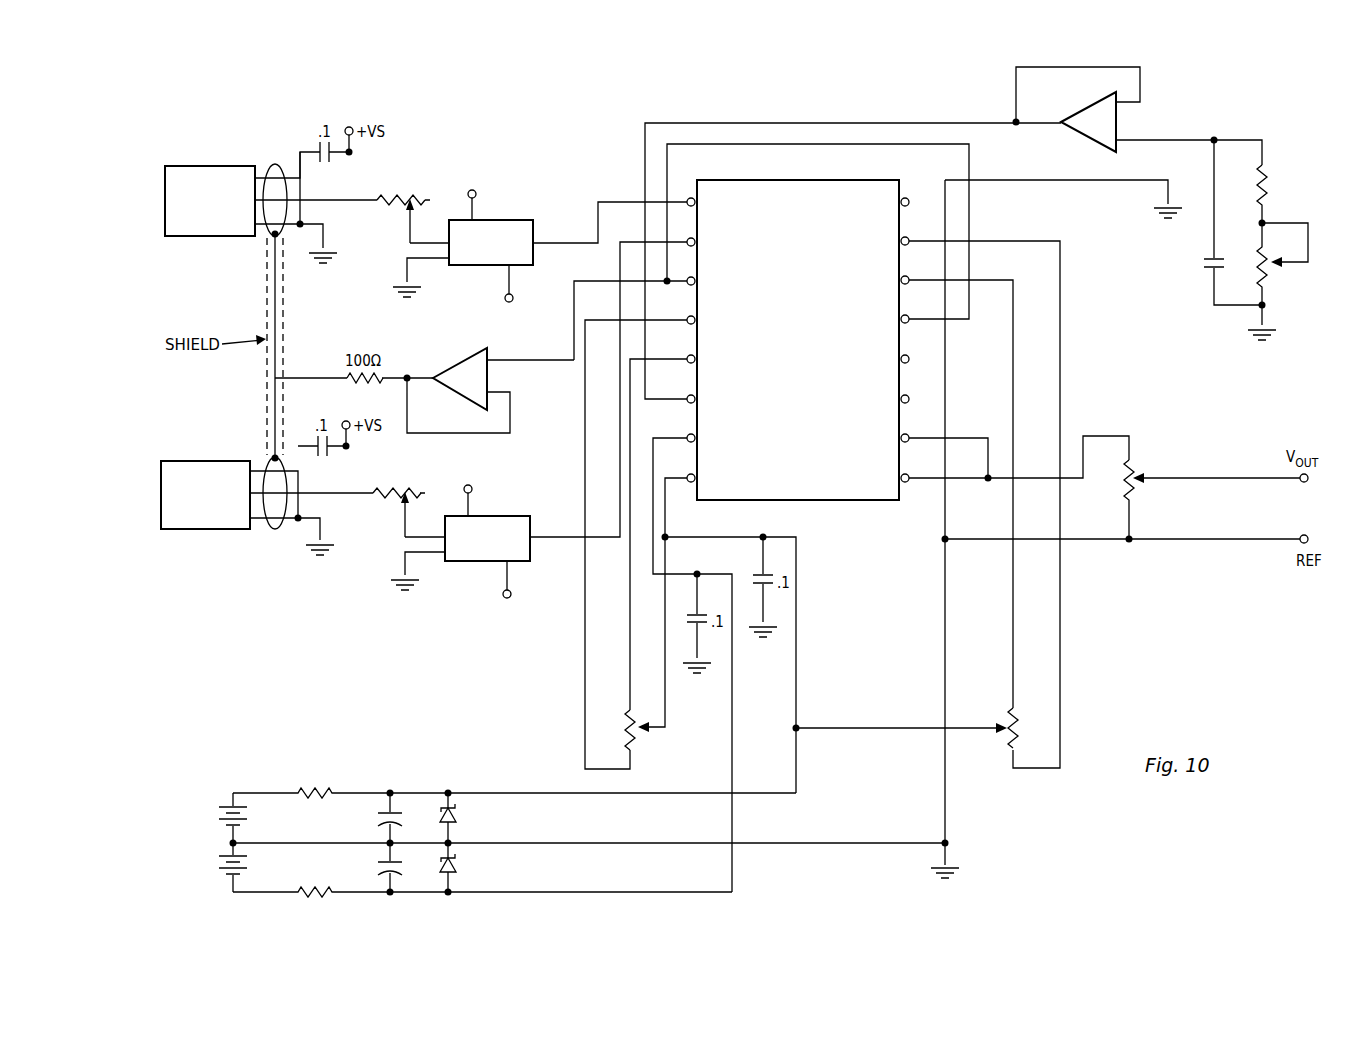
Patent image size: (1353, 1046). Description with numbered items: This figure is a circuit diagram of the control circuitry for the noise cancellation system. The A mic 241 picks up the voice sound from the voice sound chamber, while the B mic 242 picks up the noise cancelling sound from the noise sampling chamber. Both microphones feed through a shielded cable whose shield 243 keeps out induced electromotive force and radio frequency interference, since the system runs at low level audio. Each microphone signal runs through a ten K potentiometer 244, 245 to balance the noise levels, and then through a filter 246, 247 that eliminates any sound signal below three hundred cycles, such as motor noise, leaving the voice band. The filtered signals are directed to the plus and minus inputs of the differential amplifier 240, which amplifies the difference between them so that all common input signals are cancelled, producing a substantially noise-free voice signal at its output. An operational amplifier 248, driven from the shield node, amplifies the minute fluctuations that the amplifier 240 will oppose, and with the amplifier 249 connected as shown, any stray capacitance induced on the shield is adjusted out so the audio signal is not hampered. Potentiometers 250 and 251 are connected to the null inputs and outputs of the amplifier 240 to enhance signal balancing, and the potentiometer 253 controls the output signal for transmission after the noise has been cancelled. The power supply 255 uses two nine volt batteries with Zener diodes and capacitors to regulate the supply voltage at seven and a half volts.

The differential amplifier 240 is at (843, 503).
The A mic 241 is at (200, 529).
The B mic 242 is at (208, 166).
The shield 243 is at (274, 282).
The 10 K potentiometer 244 is at (437, 198).
The 10 K potentiometer 245 is at (428, 498).
The filter 246 is at (536, 224).
The filter 247 is at (463, 562).
The operational amplifier 248 is at (458, 360).
The amplifier 249 is at (1126, 122).
The potentiometer 250 is at (638, 749).
The potentiometer 251 is at (999, 740).
The potentiometer 253 is at (1144, 458).
The power supply 255 is at (270, 776).